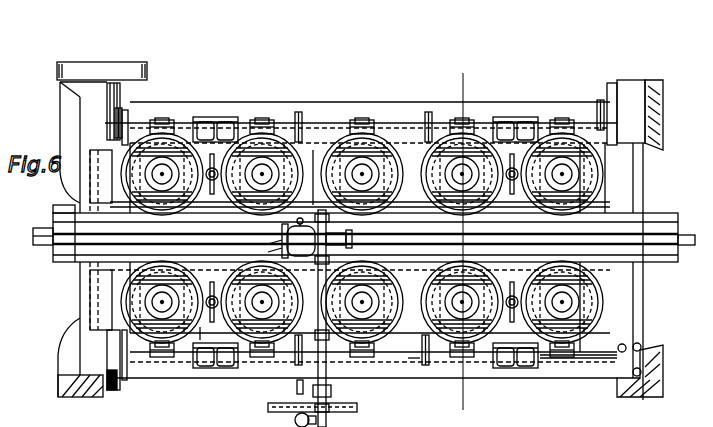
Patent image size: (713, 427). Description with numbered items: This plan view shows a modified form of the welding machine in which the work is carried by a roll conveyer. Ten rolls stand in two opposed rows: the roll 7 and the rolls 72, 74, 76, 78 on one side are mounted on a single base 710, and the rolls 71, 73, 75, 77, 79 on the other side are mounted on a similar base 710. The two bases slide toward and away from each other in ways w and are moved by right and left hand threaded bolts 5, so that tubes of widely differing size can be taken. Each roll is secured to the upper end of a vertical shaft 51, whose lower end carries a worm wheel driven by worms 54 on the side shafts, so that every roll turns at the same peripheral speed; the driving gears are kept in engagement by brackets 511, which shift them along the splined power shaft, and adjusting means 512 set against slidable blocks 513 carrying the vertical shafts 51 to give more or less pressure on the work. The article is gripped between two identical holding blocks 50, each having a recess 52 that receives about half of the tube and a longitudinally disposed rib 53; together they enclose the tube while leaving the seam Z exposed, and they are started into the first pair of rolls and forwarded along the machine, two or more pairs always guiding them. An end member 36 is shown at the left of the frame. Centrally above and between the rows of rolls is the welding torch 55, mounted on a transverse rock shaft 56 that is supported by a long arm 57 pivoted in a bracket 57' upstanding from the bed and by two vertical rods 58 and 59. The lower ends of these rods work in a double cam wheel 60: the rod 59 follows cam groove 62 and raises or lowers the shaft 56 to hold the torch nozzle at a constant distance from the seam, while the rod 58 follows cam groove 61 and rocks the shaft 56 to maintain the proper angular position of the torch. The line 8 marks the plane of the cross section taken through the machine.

The section line 8 is at (470, 78).
The vertical shaft 51 is at (164, 177).
The roll 71 is at (152, 132).
The roll 73 is at (255, 124).
The roll 75 is at (383, 135).
The roll 77 is at (497, 123).
The roll 79 is at (573, 128).
The roll 72 is at (260, 350).
The roll 74 is at (370, 352).
The roll 76 is at (473, 350).
The roll 78 is at (573, 352).
The roll 7 is at (152, 352).
The base 710 is at (313, 150).
The vertical rod 58 is at (222, 117).
The ways w is at (296, 115).
The top cap 36 is at (100, 83).
The right and left hand threaded bolts 5 is at (108, 130).
The arm 57 is at (232, 279).
The longitudinally disposed rib 53 is at (55, 210).
The brackets 511 is at (68, 220).
The holding blocks 50 is at (53, 240).
The slidable blocks 513 is at (58, 352).
The adjusting means 512 is at (58, 370).
The worms 54 is at (160, 355).
The recess 52 is at (290, 197).
The transverse rock shaft 56 is at (282, 243).
The welding torch 55 is at (362, 232).
The vertical rod 59 is at (331, 391).
The double cam wheel 60 is at (358, 409).
The cam groove 61 is at (294, 420).
The cam groove 62 is at (268, 406).
The bracket 57' is at (611, 346).
The shaft end Z is at (690, 236).